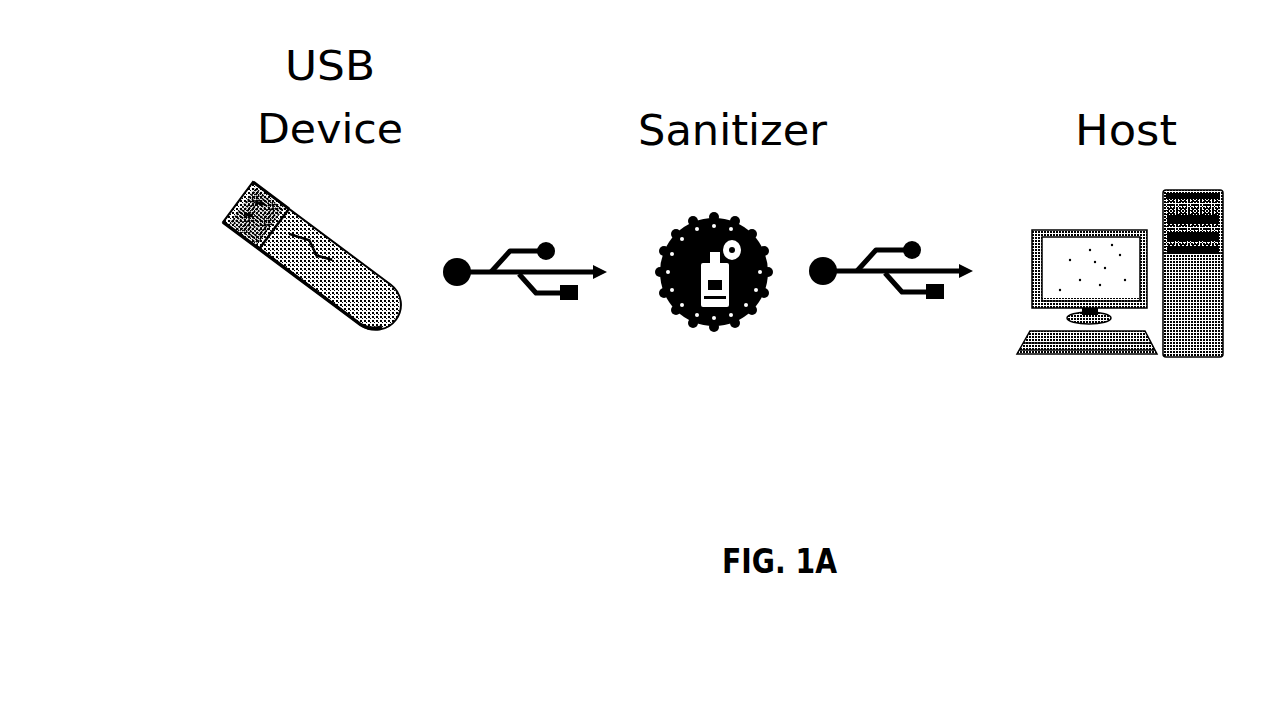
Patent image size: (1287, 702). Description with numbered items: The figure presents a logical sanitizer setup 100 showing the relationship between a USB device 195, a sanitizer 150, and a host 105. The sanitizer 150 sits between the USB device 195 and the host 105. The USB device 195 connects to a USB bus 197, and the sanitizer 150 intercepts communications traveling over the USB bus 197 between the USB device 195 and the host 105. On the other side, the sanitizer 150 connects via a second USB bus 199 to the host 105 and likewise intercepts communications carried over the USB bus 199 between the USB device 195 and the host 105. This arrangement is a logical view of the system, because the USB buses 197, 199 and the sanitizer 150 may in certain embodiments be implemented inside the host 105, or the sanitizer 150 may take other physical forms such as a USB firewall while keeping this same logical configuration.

The USB sanitizing system 100 is at (340, 445).
The host 105 is at (1127, 373).
The sanitizer 150 is at (665, 323).
The USB device 195 is at (245, 292).
The USB bus 197 is at (520, 238).
The USB bus 199 is at (878, 238).